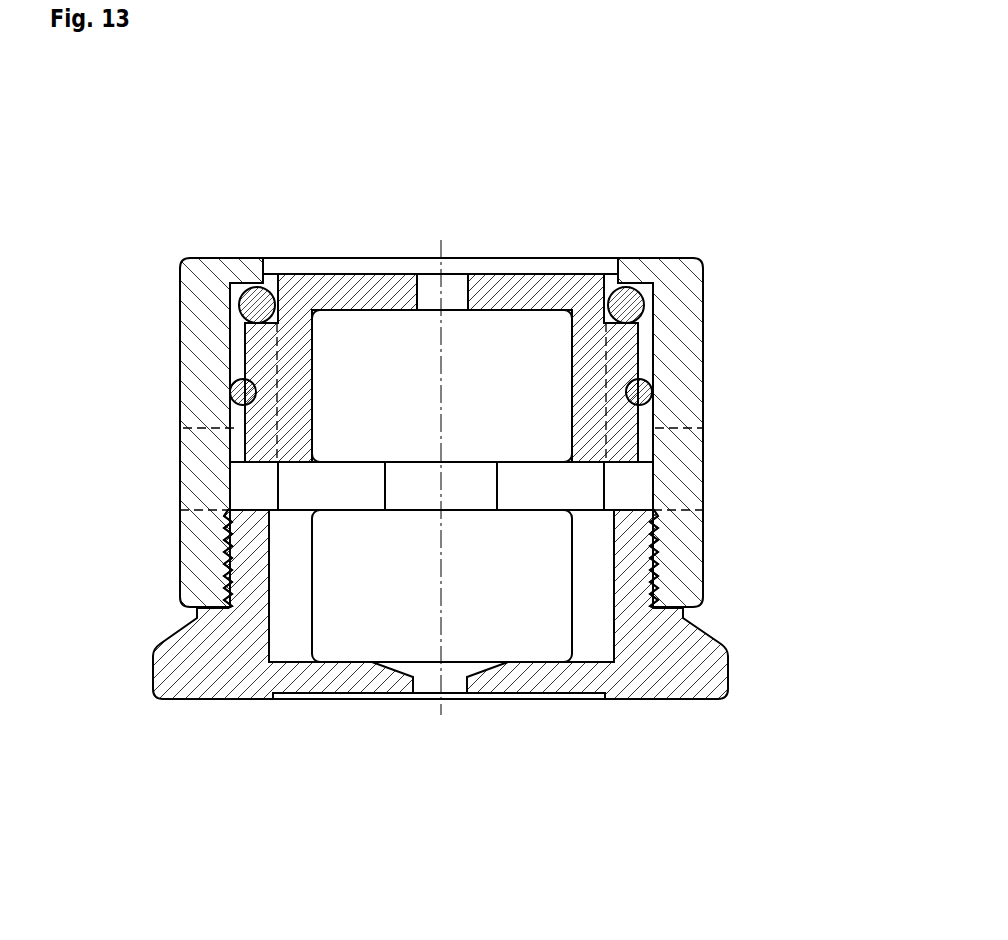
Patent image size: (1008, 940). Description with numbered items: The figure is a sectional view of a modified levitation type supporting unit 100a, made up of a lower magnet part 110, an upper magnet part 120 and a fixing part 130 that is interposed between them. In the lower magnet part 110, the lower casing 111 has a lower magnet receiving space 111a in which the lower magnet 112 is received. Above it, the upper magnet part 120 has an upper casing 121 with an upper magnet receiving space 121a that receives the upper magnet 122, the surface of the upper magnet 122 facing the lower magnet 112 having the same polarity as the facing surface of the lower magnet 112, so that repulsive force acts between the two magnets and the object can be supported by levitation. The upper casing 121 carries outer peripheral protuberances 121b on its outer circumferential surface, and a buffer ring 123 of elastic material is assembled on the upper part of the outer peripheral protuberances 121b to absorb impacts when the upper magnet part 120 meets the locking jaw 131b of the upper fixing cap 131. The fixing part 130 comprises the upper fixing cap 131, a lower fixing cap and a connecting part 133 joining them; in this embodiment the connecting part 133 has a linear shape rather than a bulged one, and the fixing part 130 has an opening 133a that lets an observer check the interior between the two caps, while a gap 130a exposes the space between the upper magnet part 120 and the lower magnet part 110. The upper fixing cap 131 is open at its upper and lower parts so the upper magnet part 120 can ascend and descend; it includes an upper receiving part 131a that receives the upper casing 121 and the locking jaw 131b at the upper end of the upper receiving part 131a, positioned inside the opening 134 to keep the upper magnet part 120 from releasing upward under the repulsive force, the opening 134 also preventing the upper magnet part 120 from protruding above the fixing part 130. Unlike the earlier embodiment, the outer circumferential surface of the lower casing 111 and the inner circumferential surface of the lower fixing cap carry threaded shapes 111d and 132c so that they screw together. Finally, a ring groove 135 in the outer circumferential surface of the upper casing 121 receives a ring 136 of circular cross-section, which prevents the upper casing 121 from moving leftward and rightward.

The levitation type supporting unit 100a is at (213, 167).
The lower magnet part 110 is at (480, 666).
The lower casing 111 is at (253, 642).
The lower magnet receiving space 111a is at (322, 666).
The threaded shape 111d is at (640, 567).
The lower magnet 112 is at (520, 633).
The upper magnet part 120 is at (526, 297).
The upper casing 121 is at (683, 302).
The upper magnet receiving space 121a is at (313, 382).
The outer peripheral protuberances 121b is at (638, 340).
The upper magnet 122 is at (401, 415).
The buffer ring 123 is at (643, 302).
The fixing part 130 is at (562, 385).
The gap 130a is at (467, 488).
The upper fixing cap 131 is at (198, 305).
The upper receiving part 131a is at (238, 427).
The locking jaw 131b is at (253, 275).
The threaded shape 132c is at (657, 525).
The connecting part 133 is at (637, 487).
The opening 133a is at (550, 487).
The opening 134 is at (557, 266).
The ring groove 135 is at (630, 390).
The ring 136 is at (643, 388).